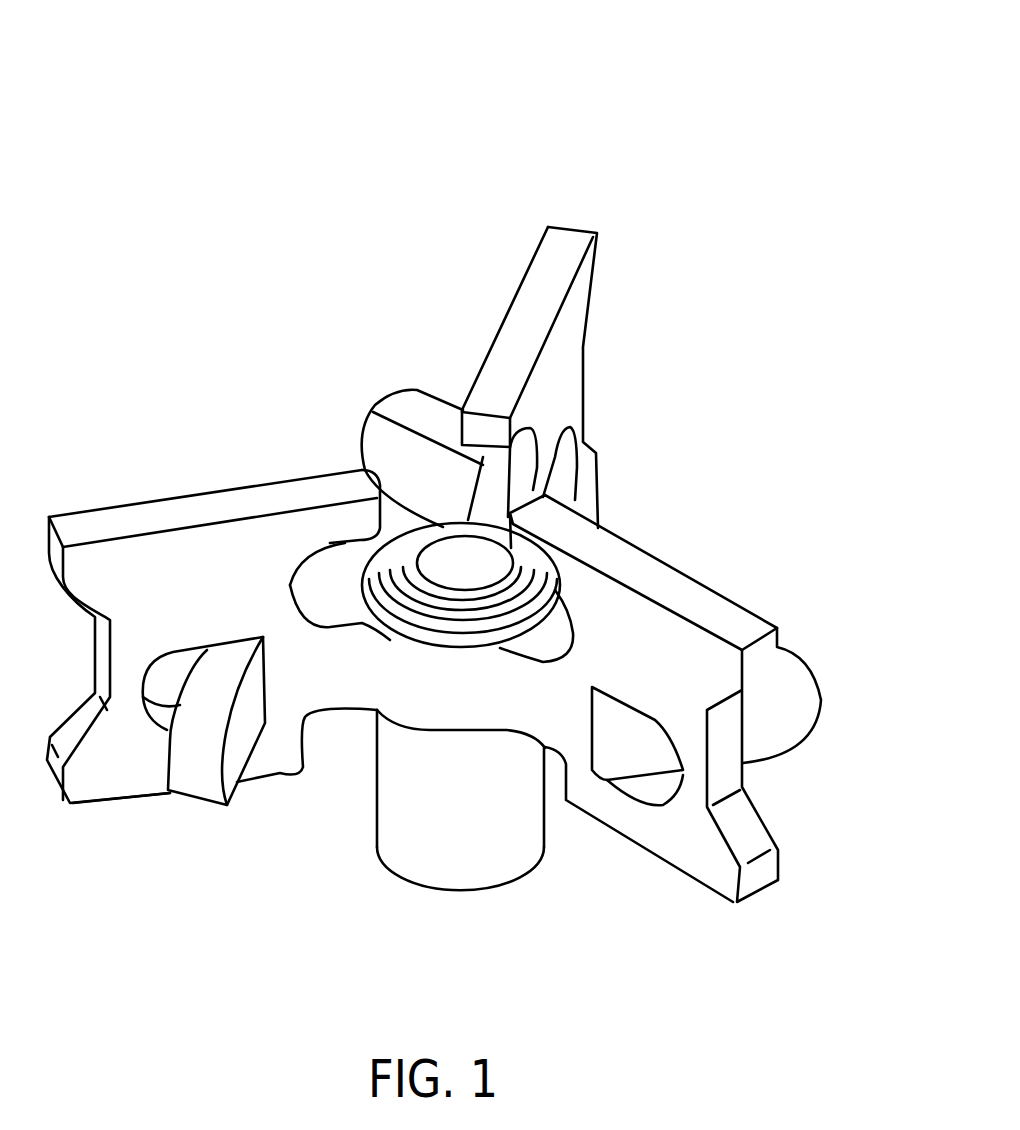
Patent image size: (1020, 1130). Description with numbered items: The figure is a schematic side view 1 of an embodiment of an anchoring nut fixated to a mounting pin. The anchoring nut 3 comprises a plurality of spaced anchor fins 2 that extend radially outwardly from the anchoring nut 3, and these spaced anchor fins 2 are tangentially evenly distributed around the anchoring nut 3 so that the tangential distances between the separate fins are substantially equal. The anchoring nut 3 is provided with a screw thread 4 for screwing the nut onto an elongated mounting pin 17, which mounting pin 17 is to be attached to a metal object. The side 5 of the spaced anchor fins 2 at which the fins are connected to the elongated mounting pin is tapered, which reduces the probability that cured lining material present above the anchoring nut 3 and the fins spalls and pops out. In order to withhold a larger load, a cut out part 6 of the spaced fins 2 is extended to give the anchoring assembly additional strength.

The side view 1 is at (573, 135).
The spaced anchor fins 2 is at (535, 282).
The anchoring nut 3 is at (443, 695).
The screw thread 4 is at (428, 573).
The side of the spaced anchor fins 5 is at (337, 563).
The cut out part 6 is at (193, 777).
The elongated mounting pin 17 is at (408, 832).